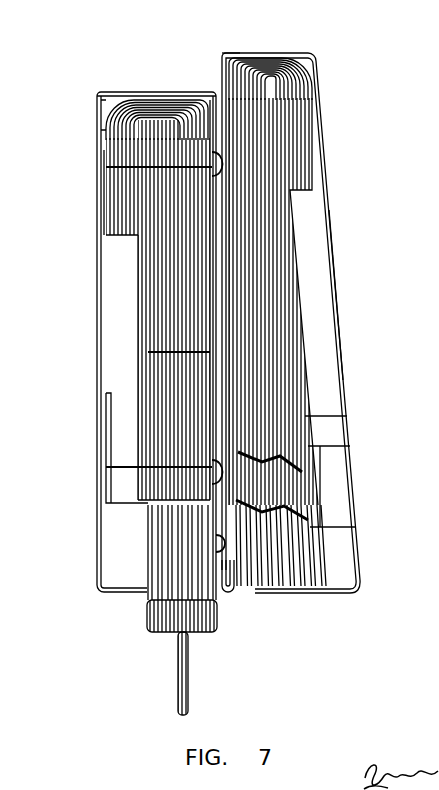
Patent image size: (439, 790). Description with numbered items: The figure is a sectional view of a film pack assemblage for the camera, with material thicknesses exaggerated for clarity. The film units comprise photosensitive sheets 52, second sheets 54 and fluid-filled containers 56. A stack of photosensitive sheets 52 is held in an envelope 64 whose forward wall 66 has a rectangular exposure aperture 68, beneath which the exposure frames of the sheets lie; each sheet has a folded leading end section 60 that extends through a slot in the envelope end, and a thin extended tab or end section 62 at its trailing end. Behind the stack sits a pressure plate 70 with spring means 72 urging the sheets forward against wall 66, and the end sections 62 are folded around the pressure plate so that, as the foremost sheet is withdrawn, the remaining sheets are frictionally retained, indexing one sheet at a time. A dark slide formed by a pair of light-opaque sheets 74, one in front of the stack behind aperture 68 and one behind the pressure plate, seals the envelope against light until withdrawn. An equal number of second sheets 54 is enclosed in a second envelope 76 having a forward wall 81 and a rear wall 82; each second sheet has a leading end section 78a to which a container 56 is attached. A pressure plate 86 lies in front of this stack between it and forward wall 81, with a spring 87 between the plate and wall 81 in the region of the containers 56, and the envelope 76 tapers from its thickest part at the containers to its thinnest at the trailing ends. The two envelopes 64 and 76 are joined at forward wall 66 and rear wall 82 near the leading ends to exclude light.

The photosensitive sheet 52 is at (140, 531).
The second sheet 54 is at (300, 386).
The fluid-filled container 56 is at (312, 527).
The folded leading end section 60 is at (218, 610).
The extended tab or end section 62 is at (100, 130).
The envelope 64 is at (94, 96).
The forward wall 66 is at (222, 112).
The exposure aperture 68 is at (108, 166).
The pressure plate 70 is at (140, 303).
The spring means 72 is at (106, 210).
The light-opaque sheet 74 is at (150, 356).
The second envelope 76 is at (333, 208).
The leading end section 78a is at (252, 588).
The forward wall 81 is at (343, 250).
The rear wall 82 is at (221, 68).
The pressure plate 86 is at (340, 417).
The spring 87 is at (340, 490).